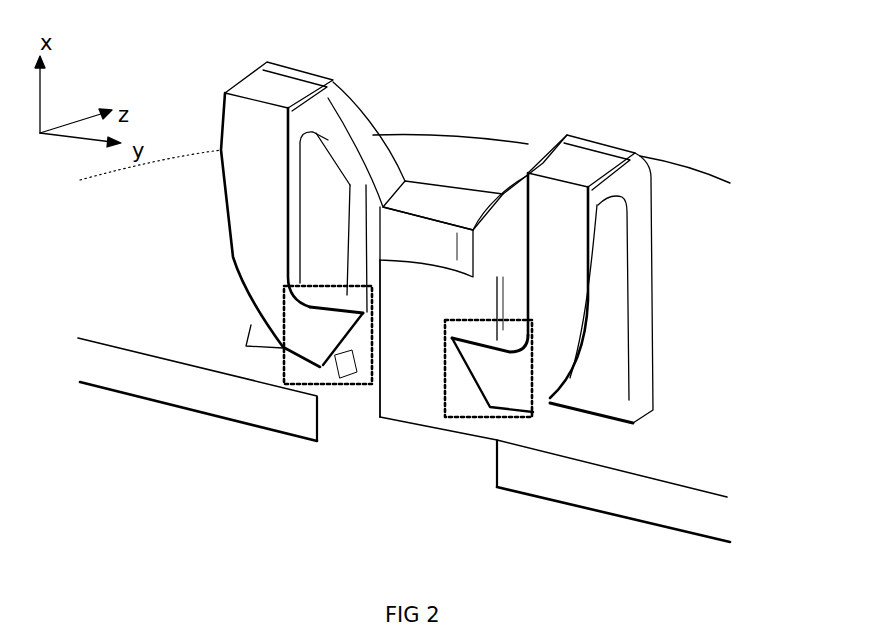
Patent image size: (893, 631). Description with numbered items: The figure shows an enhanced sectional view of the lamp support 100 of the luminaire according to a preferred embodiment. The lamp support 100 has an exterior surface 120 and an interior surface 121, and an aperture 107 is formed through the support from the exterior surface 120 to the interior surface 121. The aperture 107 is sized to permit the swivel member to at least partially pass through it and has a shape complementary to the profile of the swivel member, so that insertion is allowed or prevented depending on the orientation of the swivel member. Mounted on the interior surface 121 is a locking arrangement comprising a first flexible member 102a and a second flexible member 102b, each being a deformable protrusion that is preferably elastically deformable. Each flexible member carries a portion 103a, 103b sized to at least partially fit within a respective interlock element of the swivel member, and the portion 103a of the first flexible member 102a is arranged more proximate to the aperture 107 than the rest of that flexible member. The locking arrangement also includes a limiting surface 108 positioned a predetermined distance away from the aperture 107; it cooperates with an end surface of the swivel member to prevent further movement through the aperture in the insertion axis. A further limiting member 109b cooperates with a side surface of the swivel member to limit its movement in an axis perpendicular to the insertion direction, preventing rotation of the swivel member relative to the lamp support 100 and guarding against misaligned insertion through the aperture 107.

The lamp support 100 is at (705, 59).
The first flexible member 102a is at (219, 110).
The second flexible member 102b is at (557, 173).
The portion of the first flexible member 103a is at (283, 368).
The portion of the second flexible member 103b is at (582, 417).
The aperture 107 is at (490, 487).
The limiting surface 108 is at (432, 266).
The limiting member 109b is at (420, 422).
The exterior surface 120 is at (107, 390).
The interior surface 121 is at (113, 348).